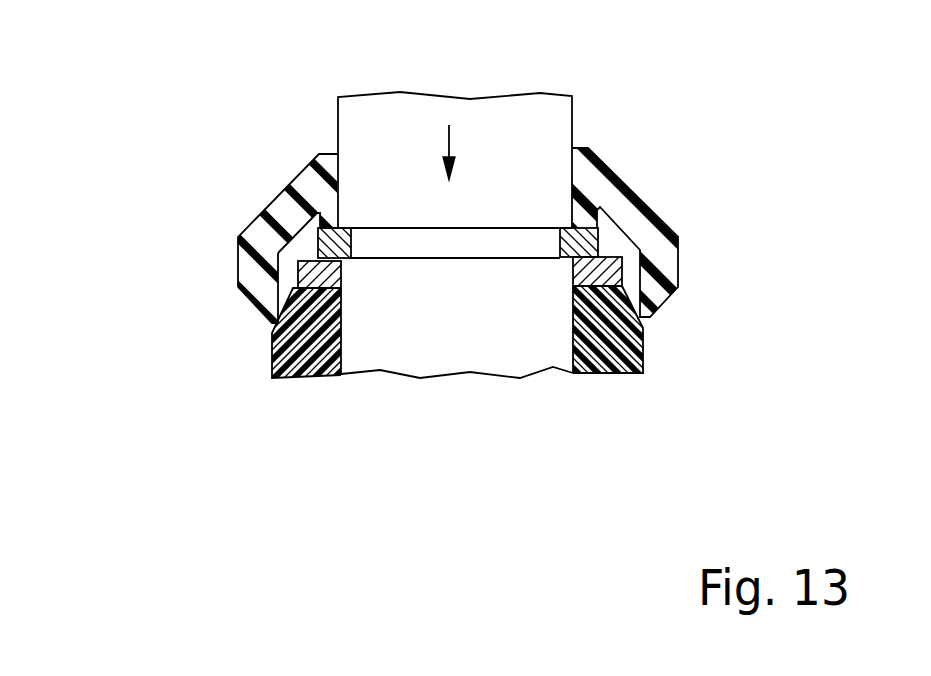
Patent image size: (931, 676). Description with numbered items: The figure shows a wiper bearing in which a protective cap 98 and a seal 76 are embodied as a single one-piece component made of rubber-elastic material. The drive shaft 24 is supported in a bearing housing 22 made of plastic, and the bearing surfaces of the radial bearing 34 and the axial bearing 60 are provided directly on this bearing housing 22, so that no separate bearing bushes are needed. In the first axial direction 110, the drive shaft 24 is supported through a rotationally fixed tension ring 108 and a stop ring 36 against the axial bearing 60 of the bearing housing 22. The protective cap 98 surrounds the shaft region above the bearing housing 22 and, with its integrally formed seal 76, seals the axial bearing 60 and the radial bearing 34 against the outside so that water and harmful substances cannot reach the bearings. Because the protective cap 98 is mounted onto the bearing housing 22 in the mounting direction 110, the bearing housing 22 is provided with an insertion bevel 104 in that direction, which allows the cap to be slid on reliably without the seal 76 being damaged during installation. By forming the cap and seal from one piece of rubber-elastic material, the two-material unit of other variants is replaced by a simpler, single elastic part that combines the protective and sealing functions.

The bearing housing 22 is at (610, 357).
The drive shaft 24 is at (553, 117).
The radial bearing 34 is at (340, 374).
The stop ring 36 is at (595, 276).
The axial bearing 60 is at (653, 313).
The seal 76 is at (273, 305).
The protective cap 98 is at (273, 205).
The insertion bevel 104 is at (293, 295).
The tension ring 108 is at (575, 236).
The first axial direction 110 is at (449, 143).